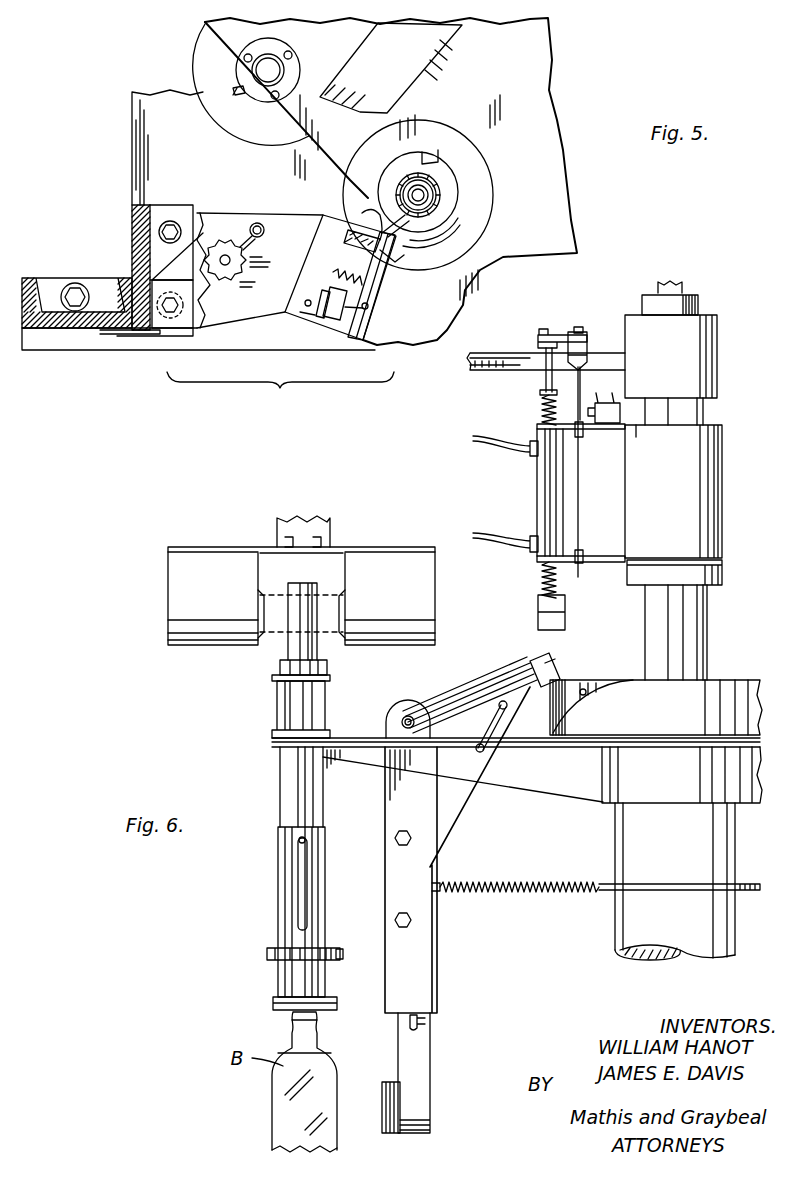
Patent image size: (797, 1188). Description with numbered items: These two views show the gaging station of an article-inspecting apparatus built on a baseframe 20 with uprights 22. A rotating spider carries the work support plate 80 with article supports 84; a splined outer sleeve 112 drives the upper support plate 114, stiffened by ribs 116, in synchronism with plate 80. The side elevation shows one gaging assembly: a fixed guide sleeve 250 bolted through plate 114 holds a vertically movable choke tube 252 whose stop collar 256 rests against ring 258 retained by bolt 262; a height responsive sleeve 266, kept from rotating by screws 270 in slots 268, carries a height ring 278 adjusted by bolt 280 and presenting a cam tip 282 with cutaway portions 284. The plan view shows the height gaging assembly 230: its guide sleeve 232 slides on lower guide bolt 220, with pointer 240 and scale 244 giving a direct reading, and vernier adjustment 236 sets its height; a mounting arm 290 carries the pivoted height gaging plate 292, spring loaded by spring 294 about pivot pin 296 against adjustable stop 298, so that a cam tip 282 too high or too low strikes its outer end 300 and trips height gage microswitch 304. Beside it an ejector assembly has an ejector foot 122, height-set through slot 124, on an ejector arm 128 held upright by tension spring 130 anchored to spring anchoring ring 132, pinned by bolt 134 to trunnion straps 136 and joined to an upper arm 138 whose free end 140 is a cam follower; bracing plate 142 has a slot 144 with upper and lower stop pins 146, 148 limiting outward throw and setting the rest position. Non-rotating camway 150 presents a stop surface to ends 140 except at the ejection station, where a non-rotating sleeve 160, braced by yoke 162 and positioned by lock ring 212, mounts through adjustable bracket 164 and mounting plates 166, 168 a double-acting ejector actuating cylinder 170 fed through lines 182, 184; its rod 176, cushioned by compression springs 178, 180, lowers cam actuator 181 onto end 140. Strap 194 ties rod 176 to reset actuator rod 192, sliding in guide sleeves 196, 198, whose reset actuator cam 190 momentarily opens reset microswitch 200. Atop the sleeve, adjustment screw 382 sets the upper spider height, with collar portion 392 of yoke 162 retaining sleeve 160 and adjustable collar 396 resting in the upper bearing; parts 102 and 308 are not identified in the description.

In FIG. 5, the baseframe 20 is at (140, 141).
In FIG. 5, the uprights 22 is at (23, 278).
In FIG. 5, the work support plate 80 is at (565, 219).
In FIG. 5, the work support 84 is at (488, 212).
In FIG. 6, the beam 102 is at (387, 632).
In FIG. 6, the outer sleeve 112 is at (620, 842).
In FIG. 5, the upper support plate 114 is at (467, 63).
In FIG. 6, the upper support plate 114 is at (543, 746).
In FIG. 6, the strengthening ribs 116 is at (505, 786).
In FIG. 6, the ejector foot 122 is at (388, 1125).
In FIG. 6, the slot 124 is at (420, 1020).
In FIG. 6, the ejector arm 128 is at (420, 1045).
In FIG. 6, the tension spring 130 is at (514, 882).
In FIG. 6, the spring anchoring ring 132 is at (748, 883).
In FIG. 6, the bolt 134 is at (402, 722).
In FIG. 6, the trunnion straps 136 is at (401, 700).
In FIG. 6, the upper arm 138 is at (450, 697).
In FIG. 6, the free end 140 is at (538, 663).
In FIG. 6, the bracing plate 142 is at (455, 790).
In FIG. 6, the slot 144 is at (510, 722).
In FIG. 6, the upper stop pin 146 is at (510, 704).
In FIG. 6, the lower stop pin 148 is at (478, 750).
In FIG. 6, the ejector assembly disabling cam 150 is at (585, 694).
In FIG. 6, the non-rotating sleeve 160 is at (707, 630).
In FIG. 5, the yoke 162 is at (192, 237).
In FIG. 6, the yoke 162 is at (506, 355).
In FIG. 6, the adjustable bracket 164 is at (715, 482).
In FIG. 6, the upper mounting plate 166 is at (636, 426).
In FIG. 6, the lower mounting plate 168 is at (610, 555).
In FIG. 6, the ejector actuating cylinder 170 is at (538, 488).
In FIG. 6, the cylinder rod 176 is at (545, 378).
In FIG. 6, the floating compression spring 178 is at (540, 406).
In FIG. 6, the floating compression spring 180 is at (540, 570).
In FIG. 6, the cam actuator 181 is at (538, 613).
In FIG. 6, the fluid line segment 182 is at (480, 440).
In FIG. 6, the fluid line segment 184 is at (506, 548).
In FIG. 6, the reset actuator cam 190 is at (584, 360).
In FIG. 6, the reset actuator rod 192 is at (583, 380).
In FIG. 6, the strap 194 is at (560, 335).
In FIG. 6, the guide sleeve 196 is at (582, 440).
In FIG. 6, the guide sleeve 198 is at (585, 555).
In FIG. 6, the reset microswitch 200 is at (610, 425).
In FIG. 6, the lock ring 212 is at (718, 573).
In FIG. 5, the lower guide bolt 220 is at (162, 298).
In FIG. 5, the height gaging assembly 230 is at (280, 390).
In FIG. 5, the guide sleeve 232 is at (170, 320).
In FIG. 5, the vernier threaded adjustment 236 is at (222, 240).
In FIG. 5, the pointer 240 is at (125, 340).
In FIG. 5, the scale means 244 is at (105, 335).
In FIG. 5, the fixed guide sleeve 250 is at (418, 173).
In FIG. 6, the fixed guide sleeve 250 is at (285, 771).
In FIG. 5, the choke tube 252 is at (402, 185).
In FIG. 6, the choke tube 252 is at (320, 655).
In FIG. 6, the stop collar 256 is at (283, 666).
In FIG. 5, the ring 258 is at (283, 97).
In FIG. 6, the ring 258 is at (330, 678).
In FIG. 6, the bolt 262 is at (280, 702).
In FIG. 5, the height responsive sleeve 266 is at (457, 197).
In FIG. 6, the height responsive sleeve 266 is at (285, 905).
In FIG. 6, the vertically extending slots 268 is at (300, 878).
In FIG. 6, the screws 270 is at (298, 841).
In FIG. 5, the height ring 278 is at (470, 182).
In FIG. 6, the height ring 278 is at (288, 955).
In FIG. 5, the bolt 280 is at (447, 165).
In FIG. 6, the bolt 280 is at (337, 953).
In FIG. 5, the height gaging cam tip 282 is at (440, 245).
In FIG. 6, the height gaging cam tip 282 is at (272, 953).
In FIG. 5, the cutaway portions 284 is at (418, 232).
In FIG. 5, the mounting arm 290 is at (240, 312).
In FIG. 5, the height gaging plate 292 is at (375, 283).
In FIG. 5, the spring 294 is at (340, 267).
In FIG. 5, the pivot pin 296 is at (367, 309).
In FIG. 5, the adjustable stop 298 is at (352, 230).
In FIG. 5, the outer end 300 is at (405, 258).
In FIG. 5, the height gage microswitch 304 is at (327, 318).
In FIG. 6, the column 308 is at (296, 583).
In FIG. 6, the adjustment screw 382 is at (683, 288).
In FIG. 6, the lockable collar portion 392 is at (718, 332).
In FIG. 6, the adjustable collar 396 is at (700, 302).